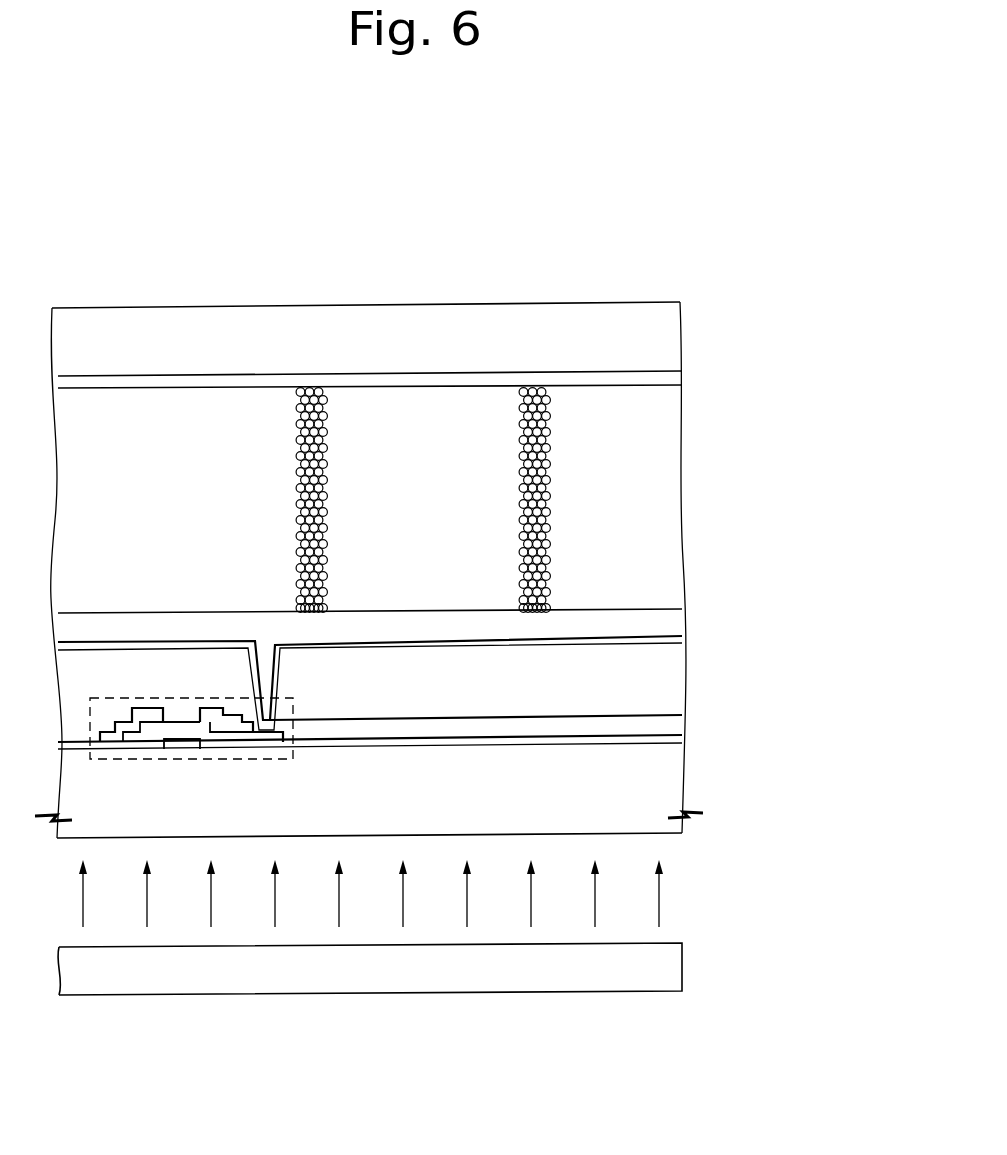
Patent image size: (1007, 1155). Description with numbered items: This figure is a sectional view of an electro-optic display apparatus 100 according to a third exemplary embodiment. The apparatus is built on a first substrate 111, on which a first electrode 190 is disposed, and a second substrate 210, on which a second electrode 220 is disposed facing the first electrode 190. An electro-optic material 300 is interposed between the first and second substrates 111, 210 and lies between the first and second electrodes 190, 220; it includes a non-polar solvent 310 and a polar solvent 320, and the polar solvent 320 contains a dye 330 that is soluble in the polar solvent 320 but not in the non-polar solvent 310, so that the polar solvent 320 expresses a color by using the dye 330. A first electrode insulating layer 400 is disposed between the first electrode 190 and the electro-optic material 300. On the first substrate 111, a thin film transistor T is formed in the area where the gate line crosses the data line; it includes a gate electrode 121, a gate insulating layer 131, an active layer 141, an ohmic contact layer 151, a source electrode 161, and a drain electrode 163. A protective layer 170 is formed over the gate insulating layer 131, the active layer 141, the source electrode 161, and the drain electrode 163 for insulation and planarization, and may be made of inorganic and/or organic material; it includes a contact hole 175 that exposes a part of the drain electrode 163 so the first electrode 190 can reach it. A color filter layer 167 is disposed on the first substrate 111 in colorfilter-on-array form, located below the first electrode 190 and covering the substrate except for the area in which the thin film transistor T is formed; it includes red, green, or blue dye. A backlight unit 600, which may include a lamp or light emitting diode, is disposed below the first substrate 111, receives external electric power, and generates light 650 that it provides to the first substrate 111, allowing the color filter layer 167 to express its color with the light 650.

The electro-optic display apparatus 100 is at (757, 205).
The second substrate 210 is at (672, 330).
The second electrode 220 is at (672, 376).
The electro-optic material 300 is at (813, 478).
The non-polar solvent 310 is at (672, 537).
The polar solvent 320 is at (527, 500).
The dye 330 is at (553, 481).
The first electrode insulating layer 400 is at (672, 622).
The first electrode 190 is at (672, 645).
The protective layer 170 is at (672, 678).
The contact hole 175 is at (265, 649).
The color filter layer 167 is at (672, 722).
The gate insulating layer 131 is at (672, 744).
The first substrate 111 is at (672, 790).
The thin film transistor T is at (90, 713).
The gate electrode 121 is at (182, 748).
The active layer 141 is at (140, 736).
The ohmic contact layer 151 is at (233, 730).
The source electrode 161 is at (112, 740).
The drain electrode 163 is at (268, 734).
The light 650 is at (662, 885).
The backlight unit 600 is at (680, 968).